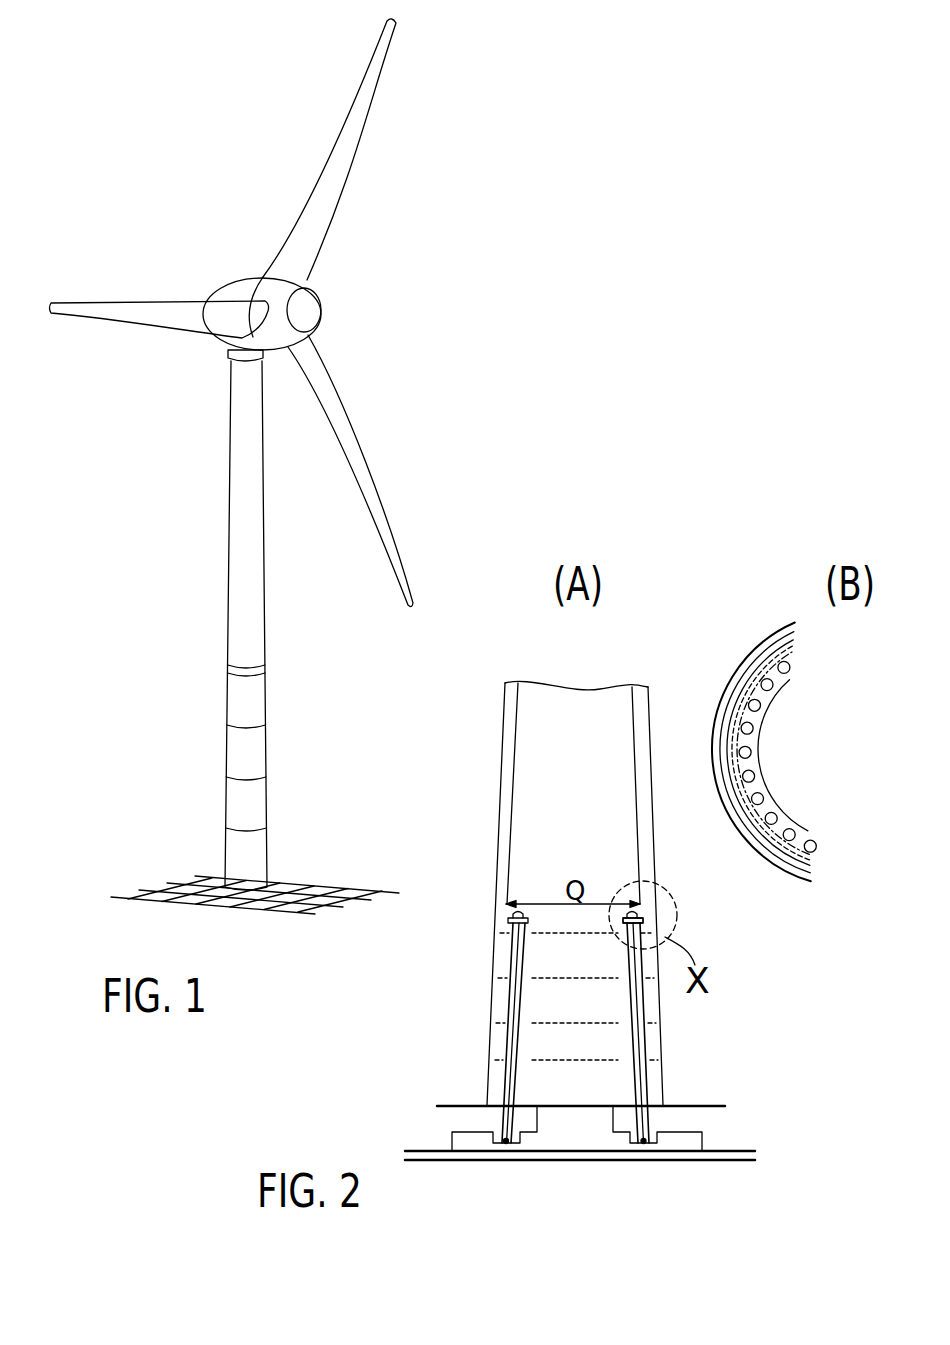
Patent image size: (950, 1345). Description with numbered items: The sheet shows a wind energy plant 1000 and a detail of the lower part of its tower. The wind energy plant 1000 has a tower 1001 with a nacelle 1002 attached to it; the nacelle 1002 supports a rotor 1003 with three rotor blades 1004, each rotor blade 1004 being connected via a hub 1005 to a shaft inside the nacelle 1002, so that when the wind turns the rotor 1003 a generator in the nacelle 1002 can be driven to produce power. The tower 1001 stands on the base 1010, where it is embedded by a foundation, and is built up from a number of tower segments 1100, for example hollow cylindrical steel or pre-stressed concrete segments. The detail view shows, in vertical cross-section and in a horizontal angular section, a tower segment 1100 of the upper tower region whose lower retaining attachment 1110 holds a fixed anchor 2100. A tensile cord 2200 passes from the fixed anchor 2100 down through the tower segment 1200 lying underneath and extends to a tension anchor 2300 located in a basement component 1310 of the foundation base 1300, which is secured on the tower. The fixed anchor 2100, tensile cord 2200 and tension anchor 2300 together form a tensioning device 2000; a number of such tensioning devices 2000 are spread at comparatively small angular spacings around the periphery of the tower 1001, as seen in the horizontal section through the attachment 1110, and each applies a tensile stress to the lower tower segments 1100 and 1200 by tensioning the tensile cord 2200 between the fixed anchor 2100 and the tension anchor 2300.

In FIG. 1, the wind energy plant 1000 is at (135, 130).
In FIG. 1, the tower 1001 is at (221, 571).
In FIG. 2, the tower 1001 is at (515, 661).
In FIG. 1, the nacelle 1002 is at (233, 292).
In FIG. 1, the rotor 1003 is at (332, 298).
In FIG. 1, the rotor blade 1004 is at (357, 473).
In FIG. 1, the hub 1005 is at (290, 275).
In FIG. 1, the tower segment 1100 is at (264, 637).
In FIG. 2, the tower segment 1100 is at (510, 766).
In FIG. 2, the lower retaining attachment 1110 is at (512, 910).
In FIG. 1, the tower segment lying underneath 1200 is at (262, 690).
In FIG. 2, the tower segment lying underneath 1200 is at (503, 955).
In FIG. 1, the base 1010 is at (330, 892).
In FIG. 2, the base 1010 is at (458, 1103).
In FIG. 2, the foundation base 1300 is at (412, 1152).
In FIG. 2, the basement component 1310 is at (463, 1137).
In FIG. 2, the tensioning device 2000 is at (660, 1043).
In FIG. 2, the fixed anchor 2100 is at (648, 915).
In FIG. 2, the tensile cord 2200 is at (642, 1015).
In FIG. 2, the tension anchor 2300 is at (657, 1143).